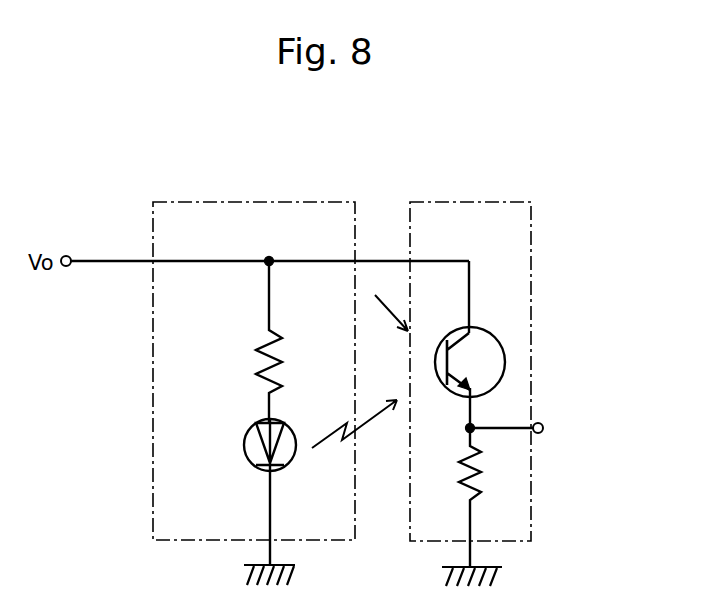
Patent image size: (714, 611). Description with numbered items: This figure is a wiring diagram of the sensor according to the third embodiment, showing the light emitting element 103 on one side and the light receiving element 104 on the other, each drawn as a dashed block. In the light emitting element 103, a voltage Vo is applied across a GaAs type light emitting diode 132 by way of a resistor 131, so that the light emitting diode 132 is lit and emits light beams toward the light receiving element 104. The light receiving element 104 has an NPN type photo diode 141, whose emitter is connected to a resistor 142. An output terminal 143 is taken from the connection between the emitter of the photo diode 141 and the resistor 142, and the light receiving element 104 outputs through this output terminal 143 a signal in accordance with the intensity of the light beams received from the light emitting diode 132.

The light emitting element 103 is at (150, 390).
The light receiving element 104 is at (450, 197).
The resistor 131 is at (255, 334).
The light emitting diode 132 is at (245, 462).
The photo diode 141 is at (500, 330).
The resistor 142 is at (480, 477).
The output terminal 143 is at (507, 427).